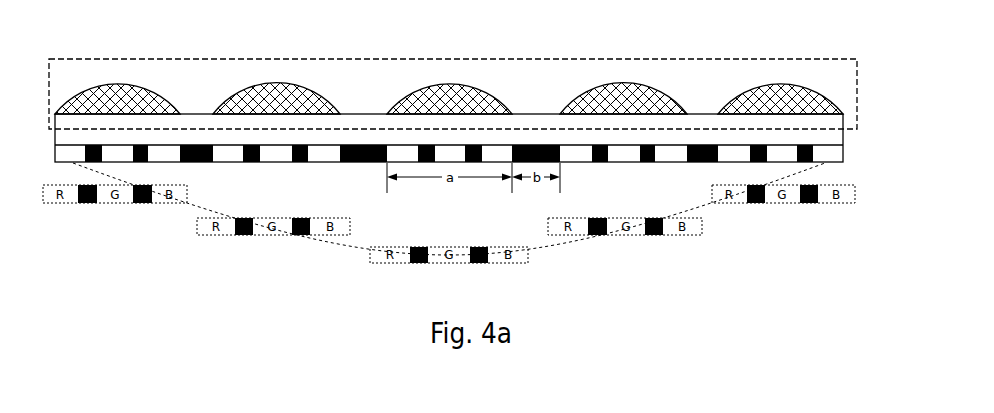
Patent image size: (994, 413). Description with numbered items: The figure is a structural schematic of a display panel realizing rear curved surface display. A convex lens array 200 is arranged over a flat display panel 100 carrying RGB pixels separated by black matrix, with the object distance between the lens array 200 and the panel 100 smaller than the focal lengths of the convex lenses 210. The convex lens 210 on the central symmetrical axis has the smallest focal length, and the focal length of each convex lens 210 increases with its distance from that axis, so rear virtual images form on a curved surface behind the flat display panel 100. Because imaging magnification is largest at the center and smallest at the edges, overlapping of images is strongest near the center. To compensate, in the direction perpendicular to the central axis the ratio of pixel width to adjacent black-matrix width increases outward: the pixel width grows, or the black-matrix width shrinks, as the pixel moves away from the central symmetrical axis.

The flat display panel 100 is at (843, 155).
The convex lens array 200 is at (480, 83).
The convex lens 210 is at (487, 88).